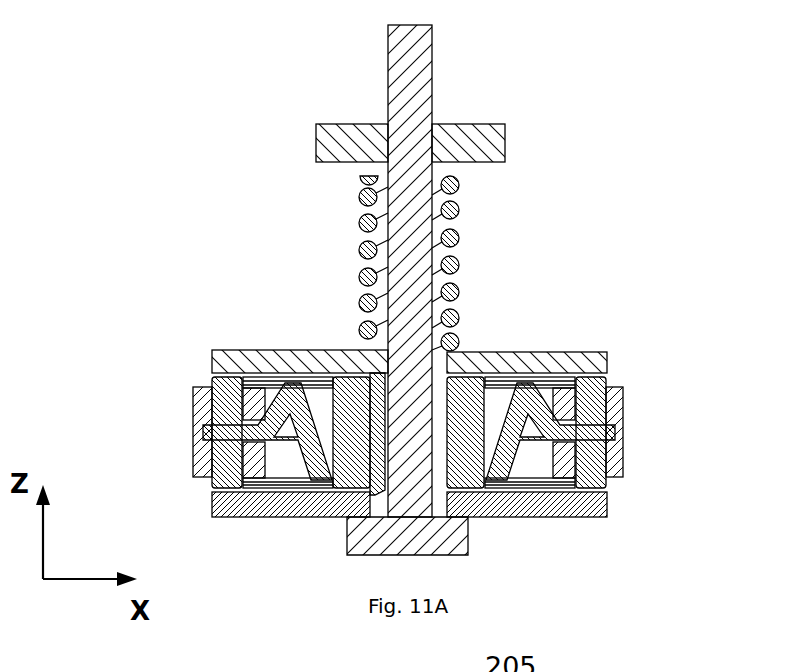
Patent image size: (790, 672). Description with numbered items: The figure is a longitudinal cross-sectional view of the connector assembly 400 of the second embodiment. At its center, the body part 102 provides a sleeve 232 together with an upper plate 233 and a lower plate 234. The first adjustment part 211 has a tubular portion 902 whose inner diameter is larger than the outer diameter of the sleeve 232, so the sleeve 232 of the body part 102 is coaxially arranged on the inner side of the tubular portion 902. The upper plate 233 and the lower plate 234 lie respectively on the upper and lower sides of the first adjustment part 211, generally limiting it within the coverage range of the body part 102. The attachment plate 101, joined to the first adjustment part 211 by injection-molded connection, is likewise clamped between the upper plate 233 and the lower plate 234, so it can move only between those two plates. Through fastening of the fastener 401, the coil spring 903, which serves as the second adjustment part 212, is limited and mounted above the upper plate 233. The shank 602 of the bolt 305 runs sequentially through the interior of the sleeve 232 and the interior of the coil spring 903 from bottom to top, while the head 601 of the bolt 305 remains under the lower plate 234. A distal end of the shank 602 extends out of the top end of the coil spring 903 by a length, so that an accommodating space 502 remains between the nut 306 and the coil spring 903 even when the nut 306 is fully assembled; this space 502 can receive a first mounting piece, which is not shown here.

The connector assembly 400 is at (140, 142).
The fastener 401 is at (405, 92).
The bolt 305 is at (422, 113).
The nut 306 is at (495, 147).
The coil spring 903 is at (362, 222).
The second adjustment part 212 is at (362, 301).
The shank 602 is at (442, 272).
The accommodating space 502 is at (470, 175).
The body part 102 is at (318, 357).
The upper plate 233 is at (520, 362).
The tubular portion 902 is at (342, 486).
The attachment plate 101 is at (197, 401).
The sleeve 232 is at (438, 398).
The first adjustment part 211 is at (606, 390).
The lower plate 234 is at (540, 512).
The head 601 is at (465, 543).